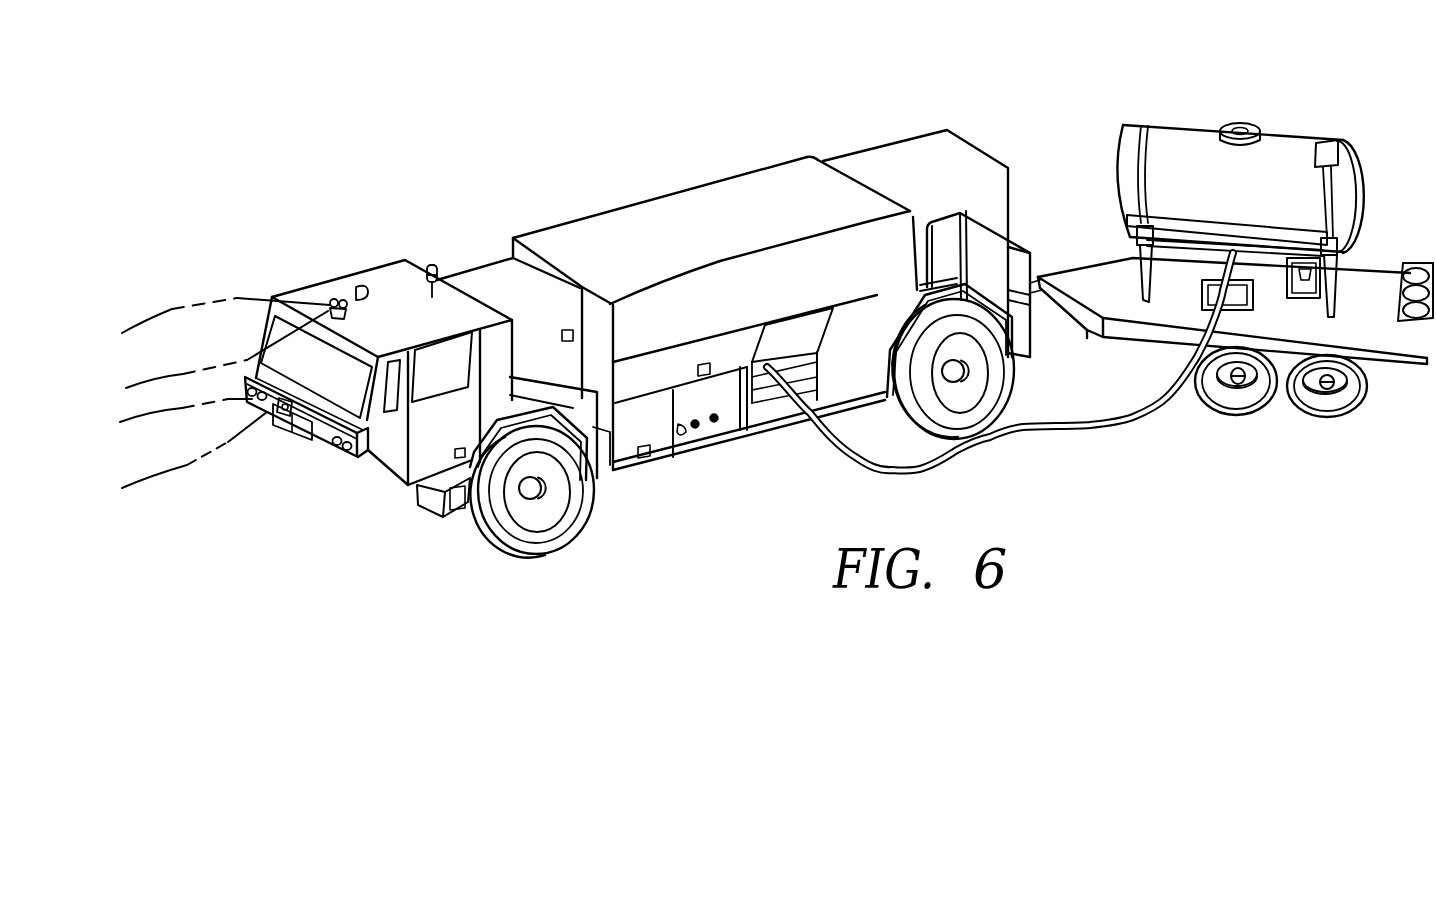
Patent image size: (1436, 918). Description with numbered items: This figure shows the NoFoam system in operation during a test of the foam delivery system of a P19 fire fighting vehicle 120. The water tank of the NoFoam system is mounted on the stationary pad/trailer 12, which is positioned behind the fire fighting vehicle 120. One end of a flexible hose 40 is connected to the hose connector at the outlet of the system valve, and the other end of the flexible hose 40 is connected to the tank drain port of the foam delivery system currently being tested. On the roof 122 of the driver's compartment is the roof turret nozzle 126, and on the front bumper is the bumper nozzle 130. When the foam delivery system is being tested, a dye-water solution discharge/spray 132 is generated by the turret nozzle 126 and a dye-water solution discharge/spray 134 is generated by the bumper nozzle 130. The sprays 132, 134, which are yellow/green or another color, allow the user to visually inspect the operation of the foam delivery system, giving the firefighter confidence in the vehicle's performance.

The stationary pad/trailer 12 is at (1096, 194).
The flexible hose 40 is at (1143, 416).
The fire fighting vehicle 120 is at (481, 252).
The roof 122 is at (421, 326).
The roof turret nozzle 126 is at (342, 298).
The bumper nozzle 130 is at (290, 430).
The dye-water solution discharge/spray 132 is at (172, 311).
The dye-water solution discharge/spray 134 is at (181, 466).